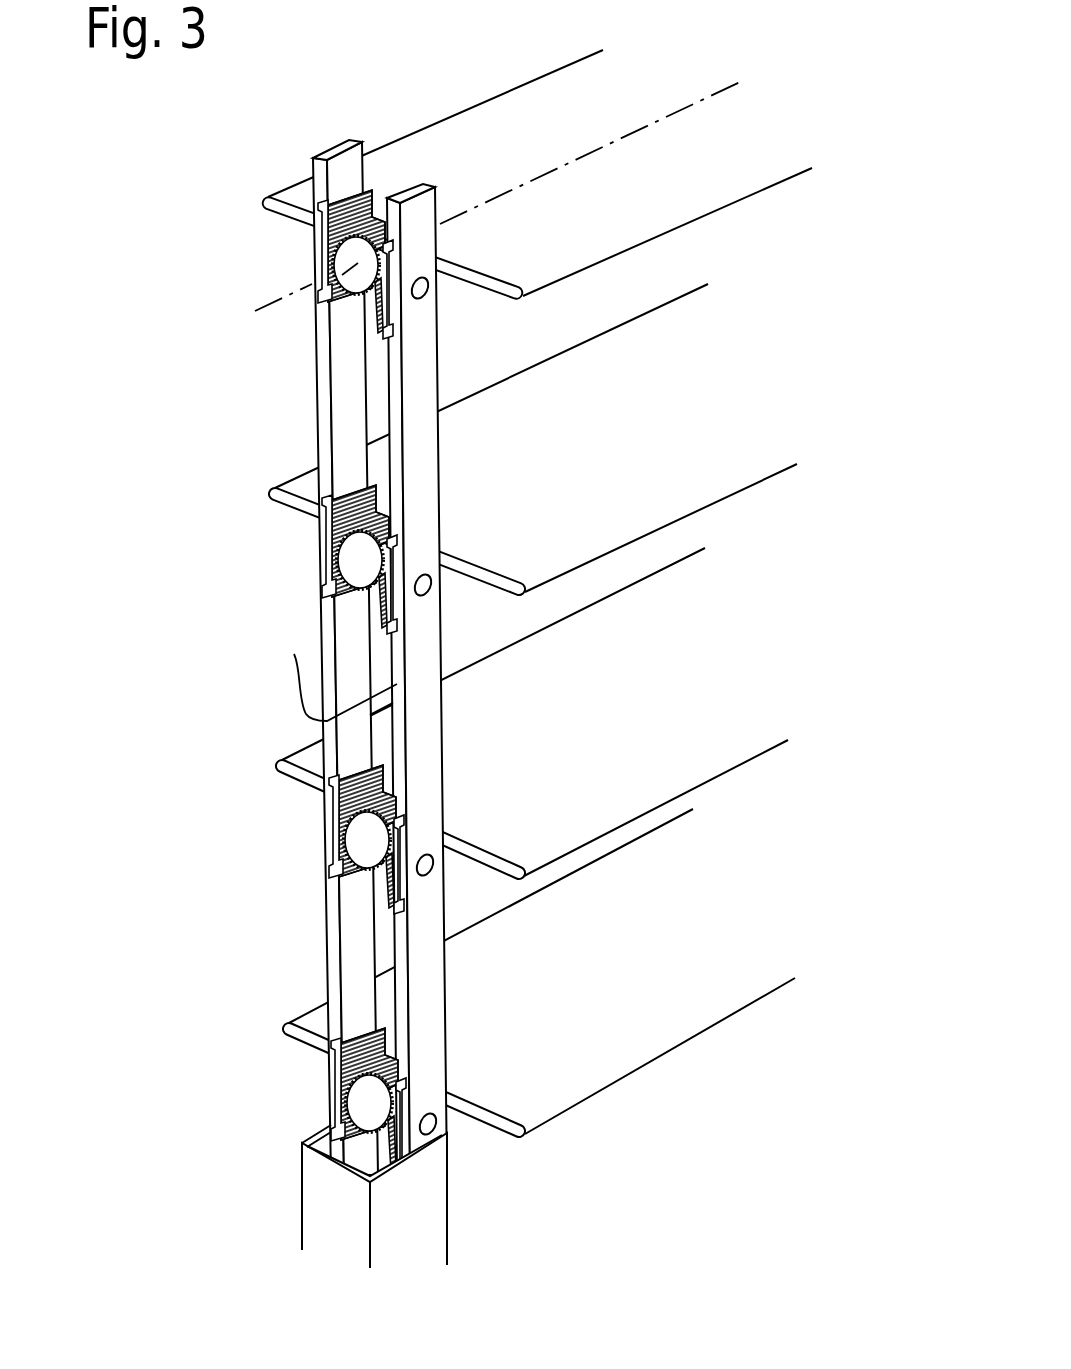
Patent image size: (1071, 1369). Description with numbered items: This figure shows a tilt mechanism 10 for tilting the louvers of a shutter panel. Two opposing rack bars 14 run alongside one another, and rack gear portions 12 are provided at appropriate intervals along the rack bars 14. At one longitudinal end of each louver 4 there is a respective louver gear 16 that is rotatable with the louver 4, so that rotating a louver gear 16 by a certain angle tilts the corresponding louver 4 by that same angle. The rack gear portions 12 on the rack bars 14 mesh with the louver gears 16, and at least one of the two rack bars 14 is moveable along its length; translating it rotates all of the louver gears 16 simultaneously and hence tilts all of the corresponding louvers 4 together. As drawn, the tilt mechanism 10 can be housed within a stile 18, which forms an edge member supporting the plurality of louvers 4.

The louver 4 is at (690, 198).
The tilt mechanism 10 is at (294, 704).
The rack gear portion 12 is at (327, 683).
The rack bar 14 is at (327, 665).
The louver gear 16 is at (362, 283).
The stile 18 is at (348, 1205).